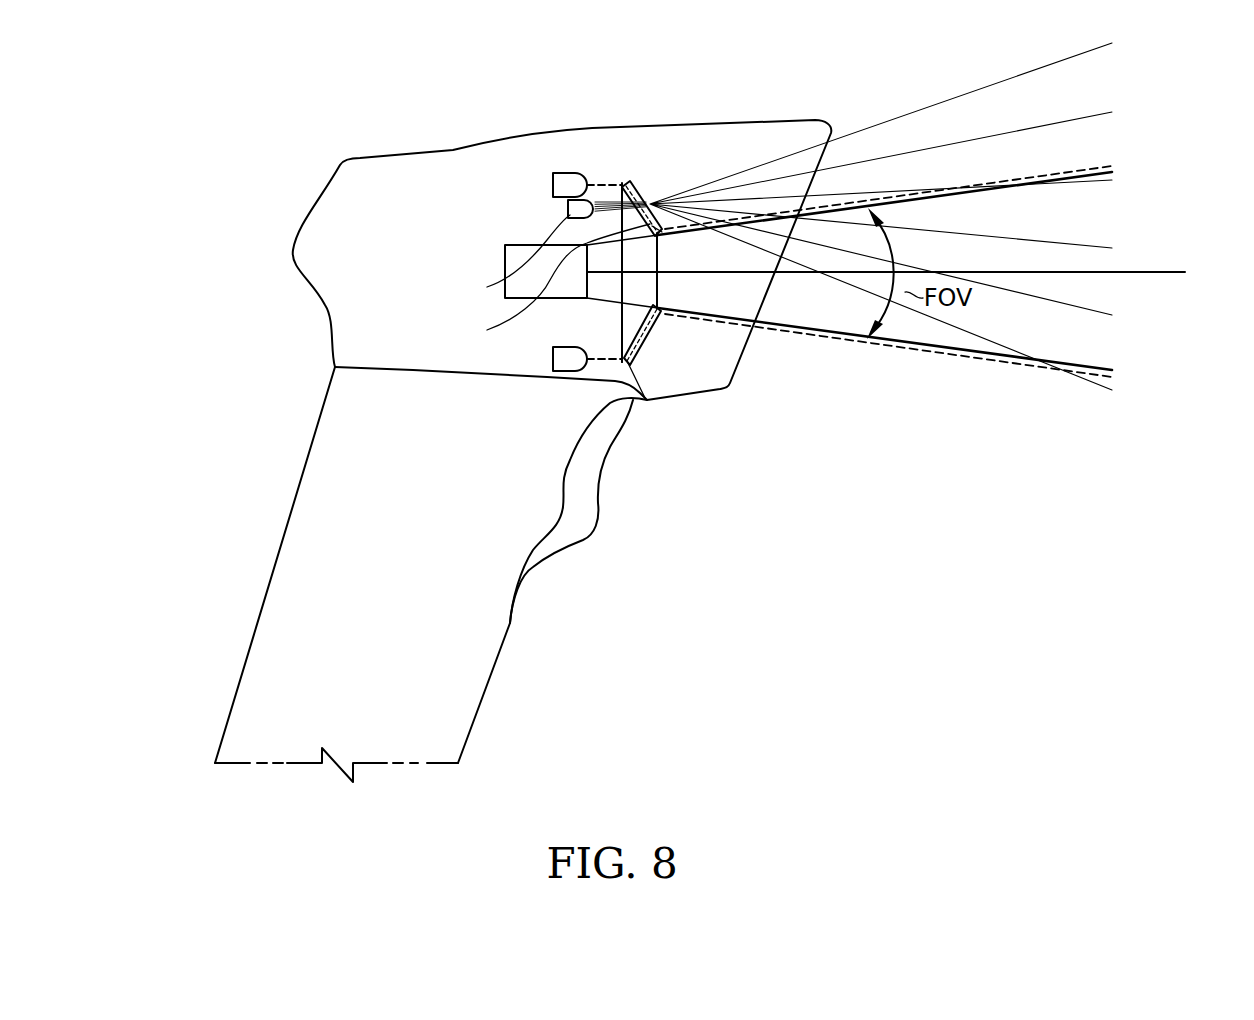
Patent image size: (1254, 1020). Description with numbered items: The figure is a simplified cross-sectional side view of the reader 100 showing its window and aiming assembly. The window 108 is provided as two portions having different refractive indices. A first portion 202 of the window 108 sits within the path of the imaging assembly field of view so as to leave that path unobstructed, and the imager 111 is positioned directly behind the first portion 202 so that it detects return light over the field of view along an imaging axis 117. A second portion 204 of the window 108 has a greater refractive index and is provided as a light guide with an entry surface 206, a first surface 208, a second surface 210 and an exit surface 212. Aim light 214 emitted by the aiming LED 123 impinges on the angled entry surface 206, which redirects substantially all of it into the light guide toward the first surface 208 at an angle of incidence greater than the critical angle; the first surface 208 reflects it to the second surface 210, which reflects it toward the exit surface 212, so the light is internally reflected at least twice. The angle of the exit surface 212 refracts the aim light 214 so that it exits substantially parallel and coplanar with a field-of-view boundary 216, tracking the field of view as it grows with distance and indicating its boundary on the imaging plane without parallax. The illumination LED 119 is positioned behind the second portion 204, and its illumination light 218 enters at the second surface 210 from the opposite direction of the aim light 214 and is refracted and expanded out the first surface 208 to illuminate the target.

The reader 100 is at (222, 163).
The aiming LED 123 is at (553, 185).
The illumination LED 119 is at (568, 209).
The imager 111 is at (505, 255).
The illumination light 218 is at (500, 257).
The second surface 210 is at (540, 284).
The entry surface 206 is at (622, 193).
The window 108 is at (622, 330).
The second portion of the window 204 is at (631, 182).
The exit surface 212 is at (664, 234).
The first portion of the window 202 is at (657, 283).
The aim light 214 is at (598, 182).
The first surface 208 is at (688, 205).
The FOV boundary 216 is at (953, 190).
The imaging axis 117 is at (1175, 275).